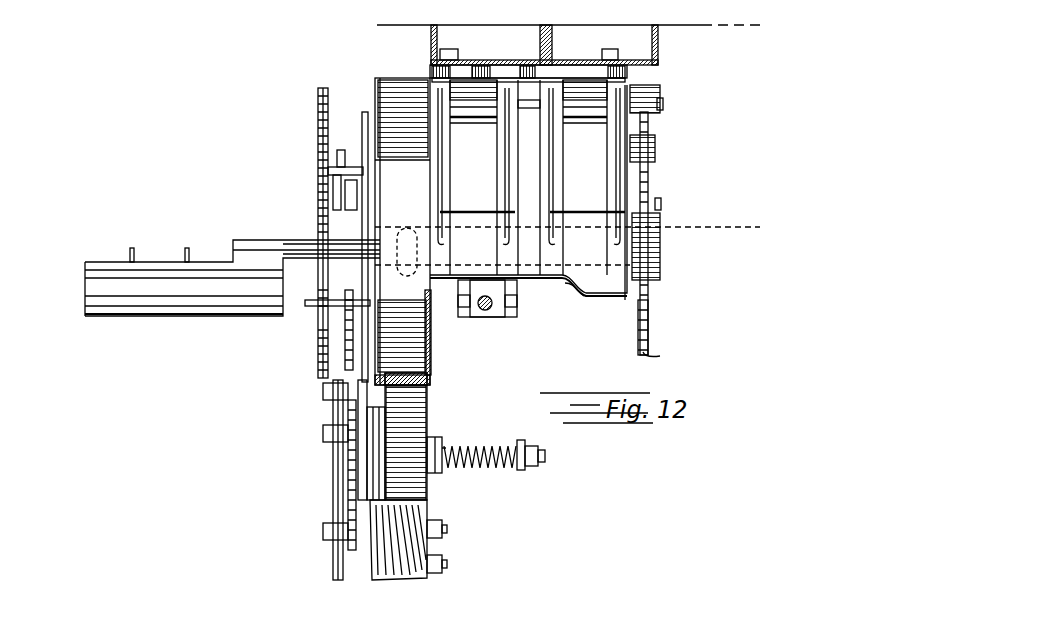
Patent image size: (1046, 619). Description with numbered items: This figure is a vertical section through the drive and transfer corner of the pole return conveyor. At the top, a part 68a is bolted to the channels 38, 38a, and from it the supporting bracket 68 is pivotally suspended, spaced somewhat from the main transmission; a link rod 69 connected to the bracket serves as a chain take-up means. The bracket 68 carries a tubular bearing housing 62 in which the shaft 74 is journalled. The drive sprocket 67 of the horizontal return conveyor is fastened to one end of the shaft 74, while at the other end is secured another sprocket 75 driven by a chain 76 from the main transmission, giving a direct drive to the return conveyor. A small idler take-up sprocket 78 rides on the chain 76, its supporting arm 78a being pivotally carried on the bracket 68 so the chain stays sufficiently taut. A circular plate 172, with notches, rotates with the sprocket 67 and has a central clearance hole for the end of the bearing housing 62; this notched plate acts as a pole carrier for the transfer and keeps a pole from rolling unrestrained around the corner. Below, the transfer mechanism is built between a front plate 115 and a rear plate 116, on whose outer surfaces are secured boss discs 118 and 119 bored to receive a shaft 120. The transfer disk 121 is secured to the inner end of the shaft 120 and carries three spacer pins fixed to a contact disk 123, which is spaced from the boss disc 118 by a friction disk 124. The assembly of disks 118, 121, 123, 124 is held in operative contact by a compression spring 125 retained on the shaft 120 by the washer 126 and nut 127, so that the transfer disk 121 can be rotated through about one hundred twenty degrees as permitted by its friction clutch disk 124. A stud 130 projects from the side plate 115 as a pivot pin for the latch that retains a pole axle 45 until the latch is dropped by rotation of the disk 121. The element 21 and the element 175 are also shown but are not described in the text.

The arm 21 is at (232, 278).
The channel 38 is at (430, 42).
The channel 38a is at (658, 50).
The pole axle 45 is at (300, 250).
The tubular bearing housing 62 is at (568, 216).
The drive sprocket 67 is at (318, 120).
The supporting bracket 68 is at (503, 164).
The part 68a is at (565, 78).
The link rod 69 is at (485, 310).
The shaft 74 is at (558, 286).
The sprocket 75 is at (648, 313).
The chain 76 is at (660, 355).
The idler take-up sprocket 78 is at (657, 203).
The supporting arm 78a is at (655, 152).
The front plate 115 is at (427, 387).
The rear plate 116 is at (427, 402).
The boss disc 118 is at (382, 427).
The boss disc 119 is at (431, 445).
The shaft 120 is at (455, 470).
The transfer disk 121 is at (350, 467).
The contact disk 123 is at (370, 484).
The friction disk 124 is at (375, 438).
The compression spring 125 is at (489, 447).
The washer 126 is at (512, 472).
The nut 127 is at (538, 467).
The stud 130 is at (323, 392).
The circular plate 172 is at (362, 137).
The plate 175 is at (375, 455).